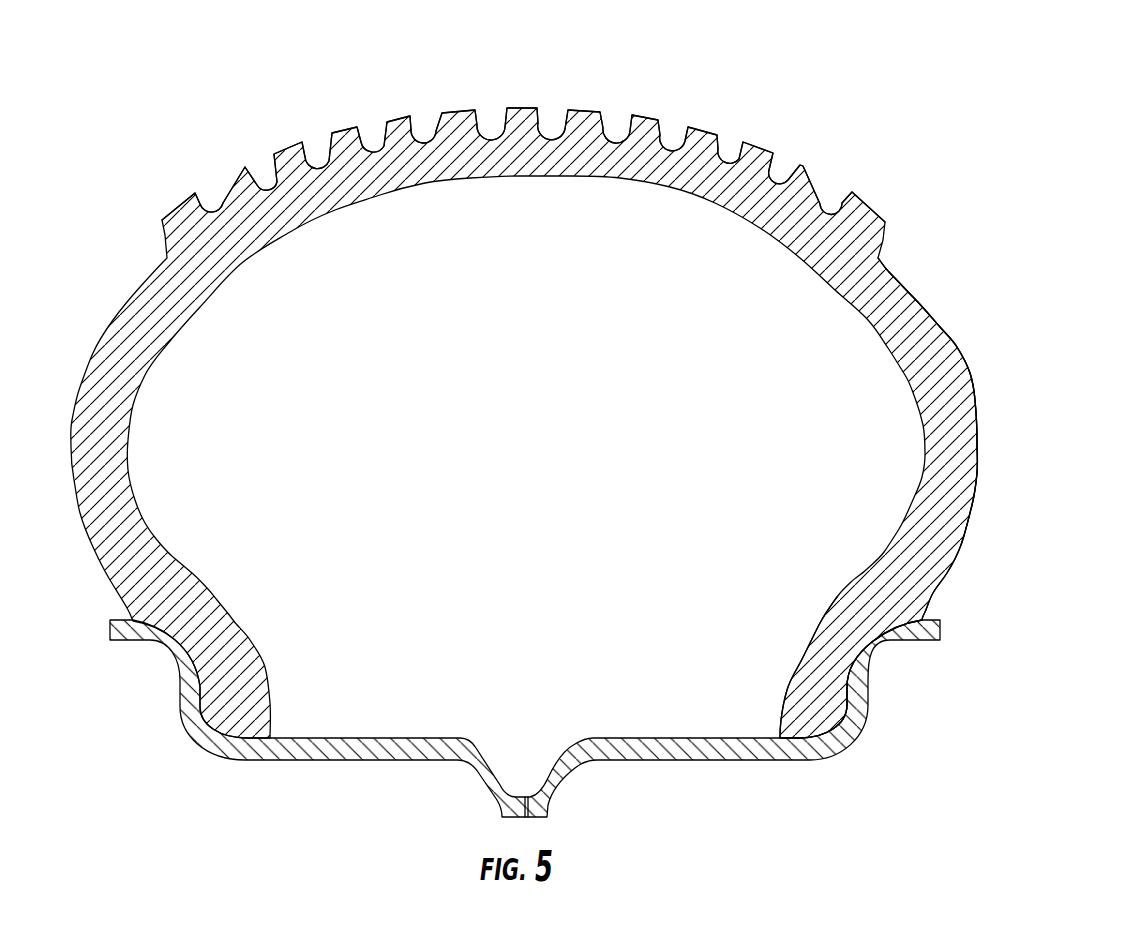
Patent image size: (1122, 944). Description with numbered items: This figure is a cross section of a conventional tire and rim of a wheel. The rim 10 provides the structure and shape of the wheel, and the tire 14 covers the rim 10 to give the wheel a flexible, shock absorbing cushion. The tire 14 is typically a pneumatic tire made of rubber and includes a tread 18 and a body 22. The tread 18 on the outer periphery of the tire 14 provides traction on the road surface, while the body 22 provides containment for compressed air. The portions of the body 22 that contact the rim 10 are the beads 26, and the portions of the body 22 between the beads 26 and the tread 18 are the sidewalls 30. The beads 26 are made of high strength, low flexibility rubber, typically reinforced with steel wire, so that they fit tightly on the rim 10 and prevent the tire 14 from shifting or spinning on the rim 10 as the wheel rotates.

The rim 10 is at (643, 762).
The tire 14 is at (913, 297).
The tread 18 is at (713, 130).
The body 22 is at (970, 383).
The beads 26 is at (872, 617).
The sidewalls 30 is at (953, 442).